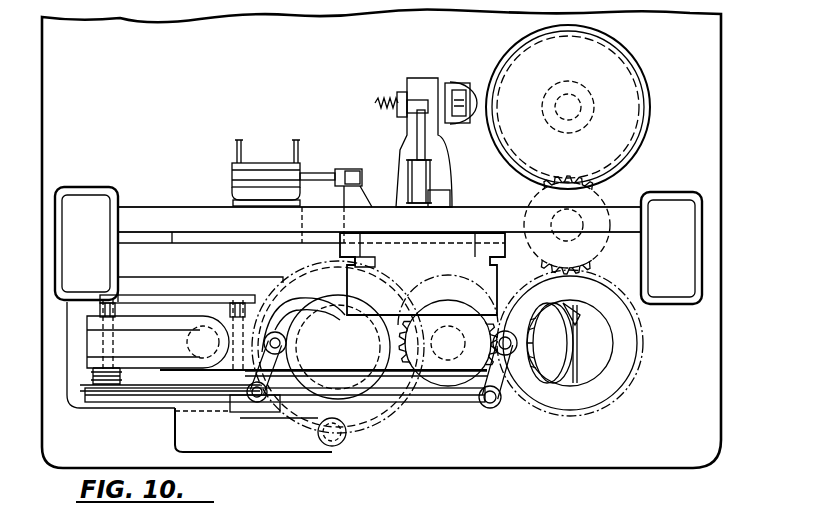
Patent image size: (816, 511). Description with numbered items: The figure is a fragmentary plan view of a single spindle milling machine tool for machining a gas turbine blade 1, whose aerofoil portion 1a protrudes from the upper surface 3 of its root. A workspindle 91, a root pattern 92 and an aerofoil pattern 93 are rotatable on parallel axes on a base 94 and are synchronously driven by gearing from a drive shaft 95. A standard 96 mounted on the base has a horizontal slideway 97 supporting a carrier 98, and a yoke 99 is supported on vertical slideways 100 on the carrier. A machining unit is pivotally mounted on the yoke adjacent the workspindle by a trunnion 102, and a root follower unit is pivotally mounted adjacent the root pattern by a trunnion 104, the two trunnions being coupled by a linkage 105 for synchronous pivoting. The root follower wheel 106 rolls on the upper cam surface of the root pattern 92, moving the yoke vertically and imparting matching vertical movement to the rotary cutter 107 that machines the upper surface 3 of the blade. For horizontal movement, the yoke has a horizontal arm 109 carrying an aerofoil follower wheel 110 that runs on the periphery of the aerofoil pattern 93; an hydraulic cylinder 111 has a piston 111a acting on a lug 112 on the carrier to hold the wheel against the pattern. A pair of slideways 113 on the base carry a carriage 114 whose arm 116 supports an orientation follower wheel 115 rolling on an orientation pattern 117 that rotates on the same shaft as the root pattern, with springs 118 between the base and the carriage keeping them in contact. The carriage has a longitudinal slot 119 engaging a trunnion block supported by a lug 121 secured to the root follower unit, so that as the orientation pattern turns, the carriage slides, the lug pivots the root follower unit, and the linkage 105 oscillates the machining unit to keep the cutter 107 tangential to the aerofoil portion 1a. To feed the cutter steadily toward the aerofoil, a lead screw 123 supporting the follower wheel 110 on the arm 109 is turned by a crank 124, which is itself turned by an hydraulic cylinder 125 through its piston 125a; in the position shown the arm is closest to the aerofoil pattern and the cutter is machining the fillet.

The blade 1 is at (597, 345).
The aerofoil portion 1a is at (577, 333).
The upper surface 3 is at (587, 365).
The workspindle 91 is at (606, 362).
The root pattern 92 is at (342, 378).
The aerofoil pattern 93 is at (516, 48).
The base 94 is at (624, 457).
The drive shaft 95 is at (454, 405).
The standard 96 is at (690, 198).
The horizontal slideway 97 is at (247, 237).
The carrier 98 is at (432, 250).
The yoke 99 is at (422, 274).
The vertical slideways 100 is at (372, 265).
The trunnion 102 is at (537, 292).
The trunnion 104 is at (275, 342).
The linkage 105 is at (422, 407).
The root follower wheel 106 is at (302, 305).
The rotary cutter 107 is at (545, 392).
The horizontal arm 109 is at (405, 150).
The aerofoil follower wheel 110 is at (462, 85).
The hydraulic cylinder 111 is at (263, 160).
The piston 111a is at (310, 170).
The lug 112 is at (343, 203).
The slideways 113 is at (230, 305).
The carriage 114 is at (117, 320).
The orientation follower wheel 115 is at (344, 453).
The arm 116 is at (238, 440).
The orientation pattern 117 is at (344, 410).
The springs 118 is at (90, 372).
The longitudinal slot 119 is at (172, 345).
The lug 121 is at (145, 350).
The lead screw 123 is at (383, 97).
The crank 124 is at (398, 110).
The hydraulic cylinder 125 is at (428, 170).
The piston 125a is at (441, 200).